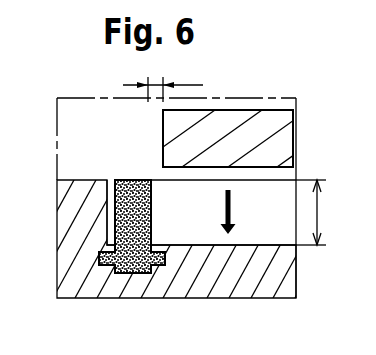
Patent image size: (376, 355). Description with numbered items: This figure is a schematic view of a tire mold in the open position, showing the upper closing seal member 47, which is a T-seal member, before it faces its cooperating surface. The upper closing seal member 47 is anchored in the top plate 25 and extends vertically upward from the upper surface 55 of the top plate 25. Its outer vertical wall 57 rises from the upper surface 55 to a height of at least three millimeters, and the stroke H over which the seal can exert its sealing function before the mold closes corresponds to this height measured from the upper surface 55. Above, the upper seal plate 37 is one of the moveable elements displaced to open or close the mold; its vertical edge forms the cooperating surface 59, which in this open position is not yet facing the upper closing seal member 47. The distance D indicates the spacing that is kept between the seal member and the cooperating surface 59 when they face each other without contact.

The top plate 25 is at (82, 195).
The upper seal plate 37 is at (266, 138).
The upper closing seal member 47 is at (115, 227).
The upper surface 55 is at (257, 238).
The outer vertical wall 57 is at (168, 222).
The cooperating surface 59 is at (148, 128).